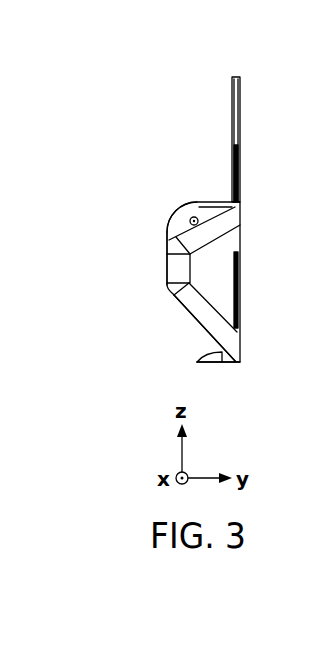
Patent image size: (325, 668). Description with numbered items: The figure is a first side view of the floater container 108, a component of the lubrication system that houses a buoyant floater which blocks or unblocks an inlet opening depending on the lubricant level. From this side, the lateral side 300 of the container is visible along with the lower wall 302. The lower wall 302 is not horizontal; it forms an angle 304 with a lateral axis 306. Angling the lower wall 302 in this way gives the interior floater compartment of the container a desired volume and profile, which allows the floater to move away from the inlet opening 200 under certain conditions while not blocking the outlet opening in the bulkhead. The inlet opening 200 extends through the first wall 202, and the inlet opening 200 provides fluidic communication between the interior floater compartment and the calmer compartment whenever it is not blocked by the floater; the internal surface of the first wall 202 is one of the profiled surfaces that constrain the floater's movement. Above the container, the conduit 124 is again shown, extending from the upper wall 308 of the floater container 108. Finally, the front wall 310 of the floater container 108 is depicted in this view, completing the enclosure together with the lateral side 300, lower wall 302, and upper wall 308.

The floater container 108 is at (132, 100).
The conduit 124 is at (212, 101).
The inlet opening 200 is at (193, 207).
The first wall 202 is at (172, 225).
The lateral side 300 is at (236, 242).
The lower wall 302 is at (178, 330).
The angle 304 is at (207, 360).
The lateral axis 306 is at (210, 364).
The upper wall 308 is at (200, 185).
The front wall 310 is at (142, 269).